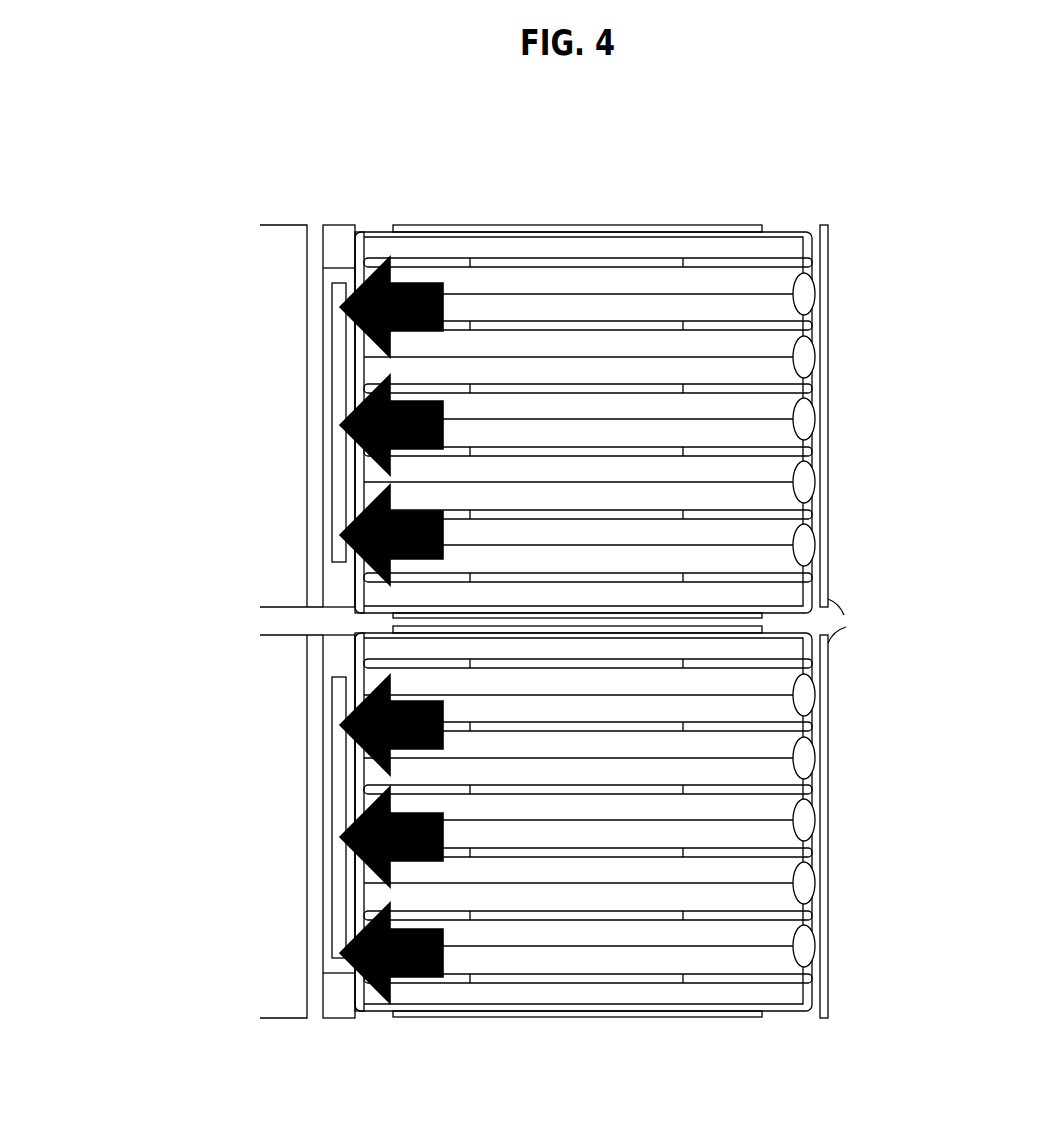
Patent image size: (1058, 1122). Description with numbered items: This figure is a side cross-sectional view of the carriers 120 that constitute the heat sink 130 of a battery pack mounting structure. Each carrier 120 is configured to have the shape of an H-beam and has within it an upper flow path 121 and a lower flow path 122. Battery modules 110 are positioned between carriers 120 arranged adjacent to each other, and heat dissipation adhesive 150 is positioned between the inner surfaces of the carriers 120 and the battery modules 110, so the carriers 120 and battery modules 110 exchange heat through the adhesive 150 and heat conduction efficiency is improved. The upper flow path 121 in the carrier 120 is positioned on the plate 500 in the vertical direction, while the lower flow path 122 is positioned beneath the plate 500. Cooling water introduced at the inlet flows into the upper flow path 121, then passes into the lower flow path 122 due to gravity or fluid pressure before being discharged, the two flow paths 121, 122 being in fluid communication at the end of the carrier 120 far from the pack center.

The battery module 110 is at (710, 290).
The carrier 120 is at (314, 214).
The upper flow path 121 is at (338, 363).
The lower flow path 122 is at (338, 808).
The heat sink 130 is at (148, 360).
The heat dissipation adhesive 150 is at (359, 233).
The plate 500 is at (790, 619).